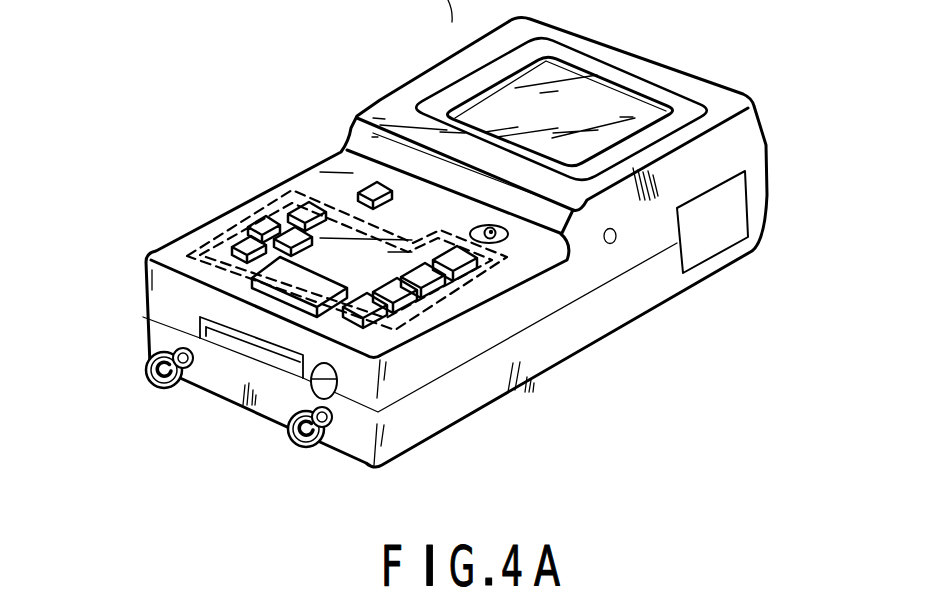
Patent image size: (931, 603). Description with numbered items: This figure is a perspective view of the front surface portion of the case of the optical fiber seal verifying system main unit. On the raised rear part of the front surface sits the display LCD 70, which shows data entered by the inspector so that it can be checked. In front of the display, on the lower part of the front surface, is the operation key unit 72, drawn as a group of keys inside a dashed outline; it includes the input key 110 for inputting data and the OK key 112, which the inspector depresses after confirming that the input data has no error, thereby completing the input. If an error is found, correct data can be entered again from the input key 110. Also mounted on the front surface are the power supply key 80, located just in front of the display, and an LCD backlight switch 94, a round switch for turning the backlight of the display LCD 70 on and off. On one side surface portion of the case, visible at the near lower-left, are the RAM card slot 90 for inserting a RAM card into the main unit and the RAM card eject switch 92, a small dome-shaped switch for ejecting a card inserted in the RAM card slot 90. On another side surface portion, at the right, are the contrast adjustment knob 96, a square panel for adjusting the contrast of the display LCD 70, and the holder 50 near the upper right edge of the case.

The holder 50 is at (733, 223).
The display LCD 70 is at (612, 93).
The operation key unit 72 is at (250, 197).
The power supply key 80 is at (370, 190).
The RAM card slot 90 is at (240, 347).
The RAM card eject switch 92 is at (337, 383).
The LCD backlight switch 94 is at (497, 246).
The contrast adjustment knob 96 is at (718, 247).
The input key 110 is at (190, 234).
The OK key 112 is at (250, 281).